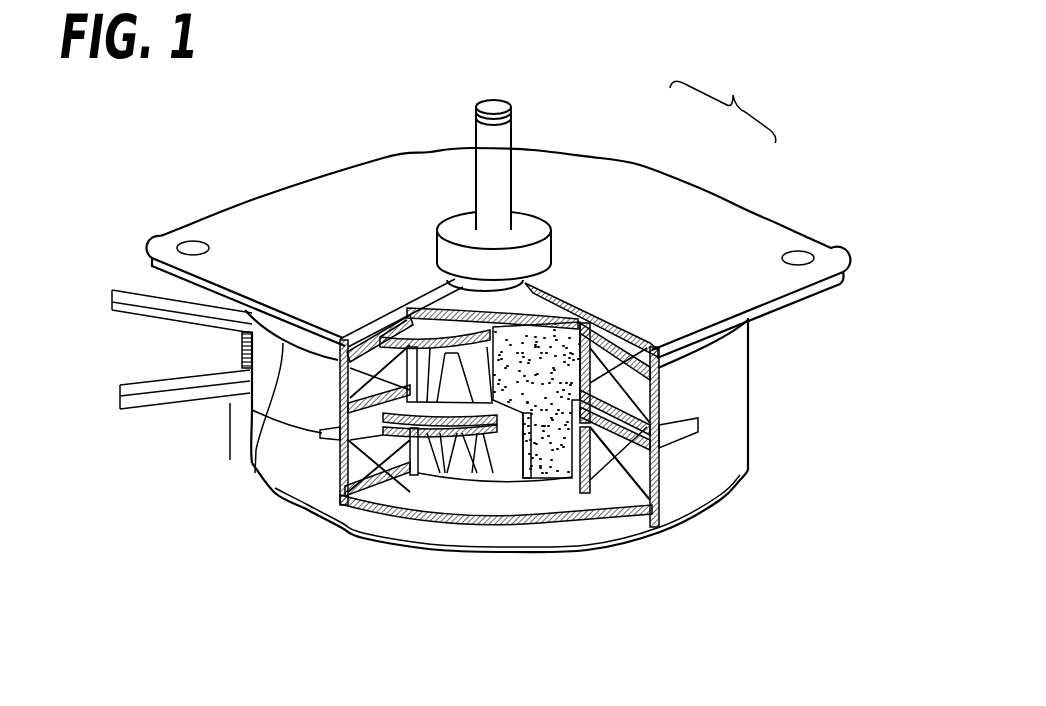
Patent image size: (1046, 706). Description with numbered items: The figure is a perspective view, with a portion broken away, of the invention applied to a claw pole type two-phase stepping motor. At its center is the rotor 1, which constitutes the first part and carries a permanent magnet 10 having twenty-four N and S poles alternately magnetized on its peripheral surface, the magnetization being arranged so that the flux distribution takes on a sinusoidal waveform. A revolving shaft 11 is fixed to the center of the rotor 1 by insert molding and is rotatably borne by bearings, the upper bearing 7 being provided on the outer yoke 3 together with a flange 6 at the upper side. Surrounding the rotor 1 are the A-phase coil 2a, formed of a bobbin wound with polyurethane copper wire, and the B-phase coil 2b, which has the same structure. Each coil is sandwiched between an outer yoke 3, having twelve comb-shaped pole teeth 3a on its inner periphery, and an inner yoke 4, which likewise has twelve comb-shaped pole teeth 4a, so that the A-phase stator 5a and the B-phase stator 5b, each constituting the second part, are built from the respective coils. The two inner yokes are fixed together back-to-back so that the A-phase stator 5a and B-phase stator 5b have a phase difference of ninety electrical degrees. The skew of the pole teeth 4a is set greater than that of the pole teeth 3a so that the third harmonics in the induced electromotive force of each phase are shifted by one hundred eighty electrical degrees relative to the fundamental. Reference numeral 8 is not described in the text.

The rotor 1 is at (723, 107).
The A-phase coil 2a is at (637, 385).
The B-phase coil 2b is at (640, 472).
The outer yoke 3 is at (423, 325).
The pole teeth of outer yoke 3a is at (467, 465).
The inner yoke 4 is at (380, 500).
The pole teeth of inner yoke 4a is at (510, 462).
The A-phase stator 5a is at (255, 473).
The B-phase stator 5b is at (228, 430).
The flange 6 is at (293, 237).
The bearing 7 is at (463, 230).
The bottom plate 8 is at (423, 523).
The permanent magnet 10 is at (585, 318).
The revolving shaft 11 is at (498, 177).